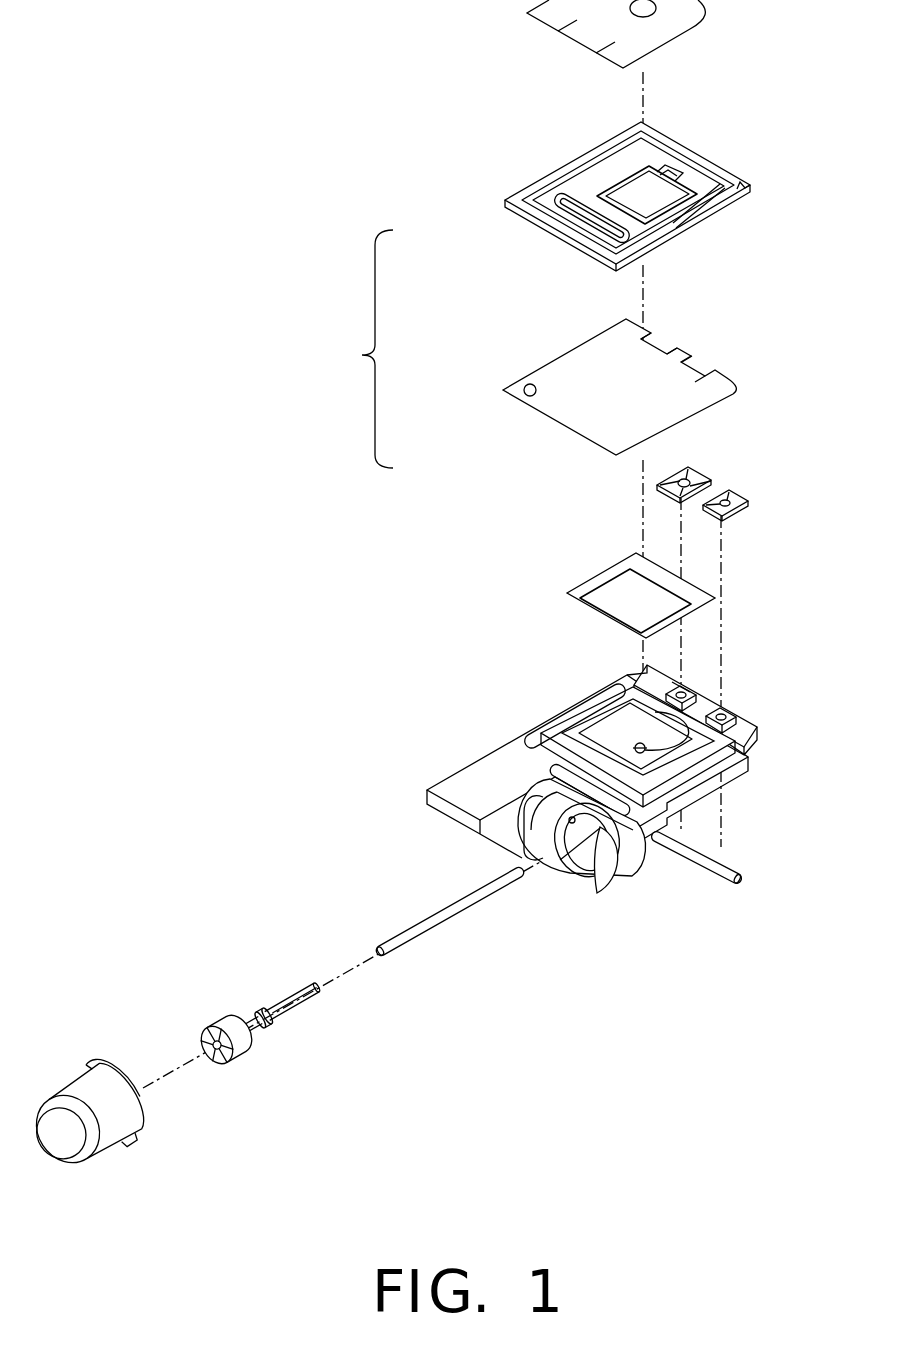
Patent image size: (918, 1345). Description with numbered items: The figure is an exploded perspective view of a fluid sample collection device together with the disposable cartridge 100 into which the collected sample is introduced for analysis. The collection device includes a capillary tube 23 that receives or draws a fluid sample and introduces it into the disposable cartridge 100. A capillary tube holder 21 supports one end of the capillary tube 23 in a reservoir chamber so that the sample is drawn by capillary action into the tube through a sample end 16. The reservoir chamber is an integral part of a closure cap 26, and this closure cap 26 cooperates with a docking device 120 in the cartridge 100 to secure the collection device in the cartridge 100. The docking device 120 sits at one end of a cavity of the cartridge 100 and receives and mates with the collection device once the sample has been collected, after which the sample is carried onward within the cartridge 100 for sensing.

The disposable cartridge 100 is at (529, 295).
The docking device 120 is at (628, 872).
The capillary tube 23 is at (470, 921).
The capillary tube holder 21 is at (325, 1010).
The sample end 16 is at (190, 1038).
The closure cap 26 is at (170, 1118).